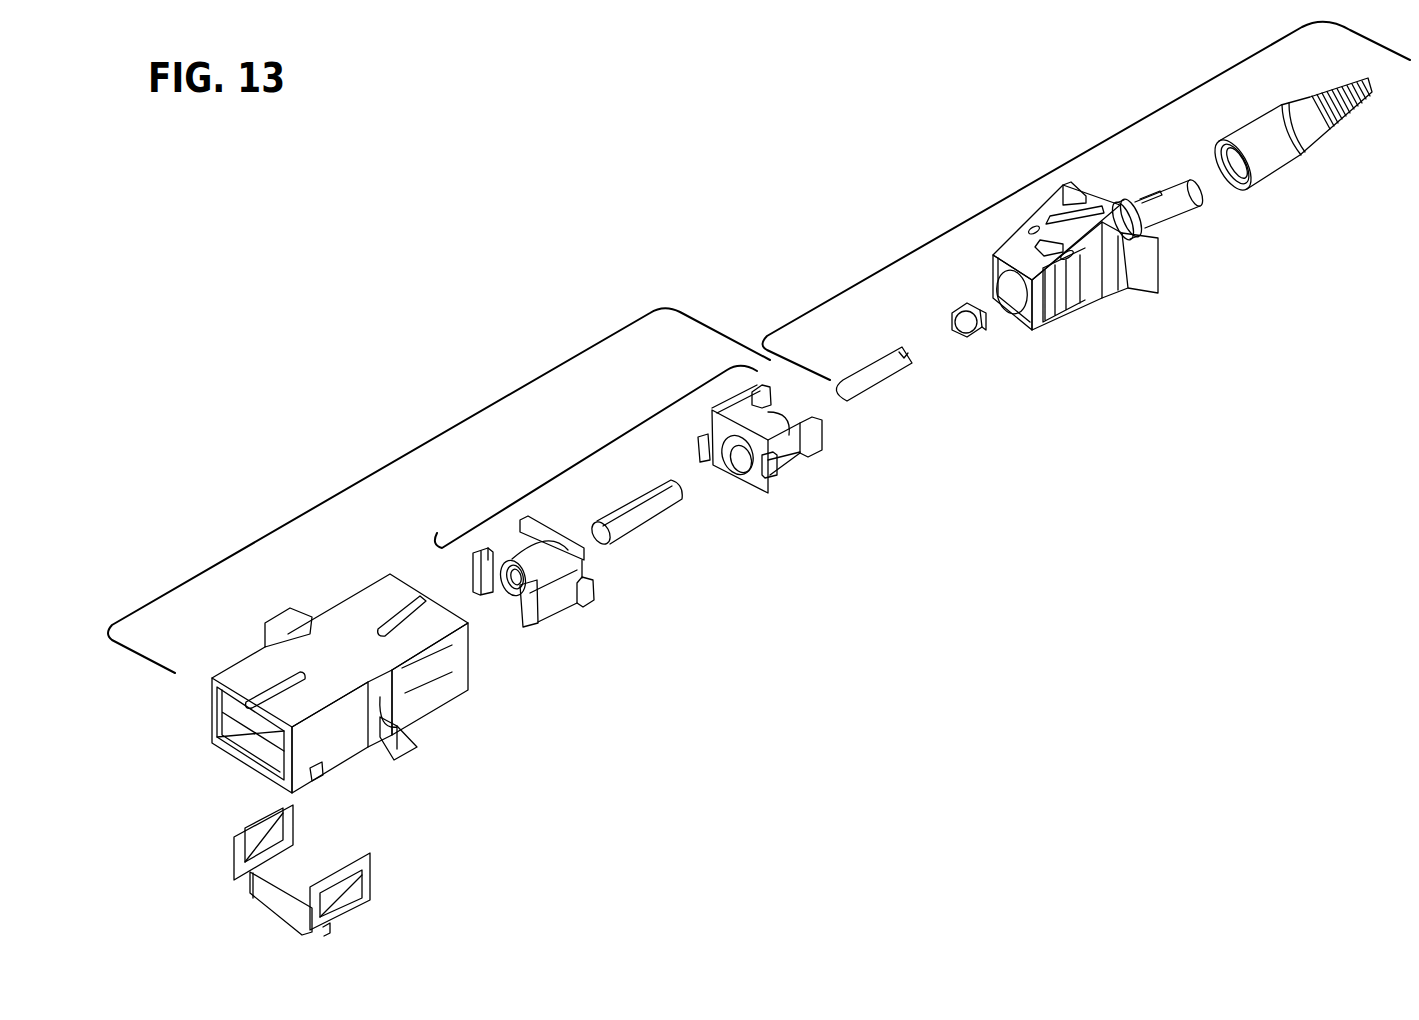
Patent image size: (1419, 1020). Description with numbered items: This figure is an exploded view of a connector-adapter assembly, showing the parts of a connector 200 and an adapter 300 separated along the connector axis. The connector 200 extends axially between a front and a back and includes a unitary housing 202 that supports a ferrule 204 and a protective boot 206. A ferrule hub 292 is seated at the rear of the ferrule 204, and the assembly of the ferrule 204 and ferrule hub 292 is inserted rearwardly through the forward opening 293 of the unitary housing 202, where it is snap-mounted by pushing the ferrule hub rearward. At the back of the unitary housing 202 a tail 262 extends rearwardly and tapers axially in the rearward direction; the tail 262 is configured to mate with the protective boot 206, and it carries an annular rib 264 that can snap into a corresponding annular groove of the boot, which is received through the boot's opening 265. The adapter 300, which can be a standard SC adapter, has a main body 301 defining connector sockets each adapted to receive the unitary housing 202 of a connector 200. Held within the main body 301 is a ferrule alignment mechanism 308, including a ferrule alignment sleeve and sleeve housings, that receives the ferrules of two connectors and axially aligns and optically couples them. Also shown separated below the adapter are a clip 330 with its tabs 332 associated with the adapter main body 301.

The connector 200 is at (1040, 178).
The unitary housing 202 is at (1017, 267).
The ferrule 204 is at (874, 372).
The protective boot 206 is at (1253, 137).
The tail 262 is at (1180, 193).
The annular rib 264 is at (1128, 203).
The boot opening 265 is at (1241, 186).
The ferrule hub 292 is at (958, 308).
The forward opening 293 is at (1017, 308).
The adapter 300 is at (390, 465).
The main body 301 is at (371, 606).
The ferrule alignment mechanism 308 is at (583, 451).
The mounting clip 330 is at (307, 920).
The clip tabs 332 is at (250, 847).